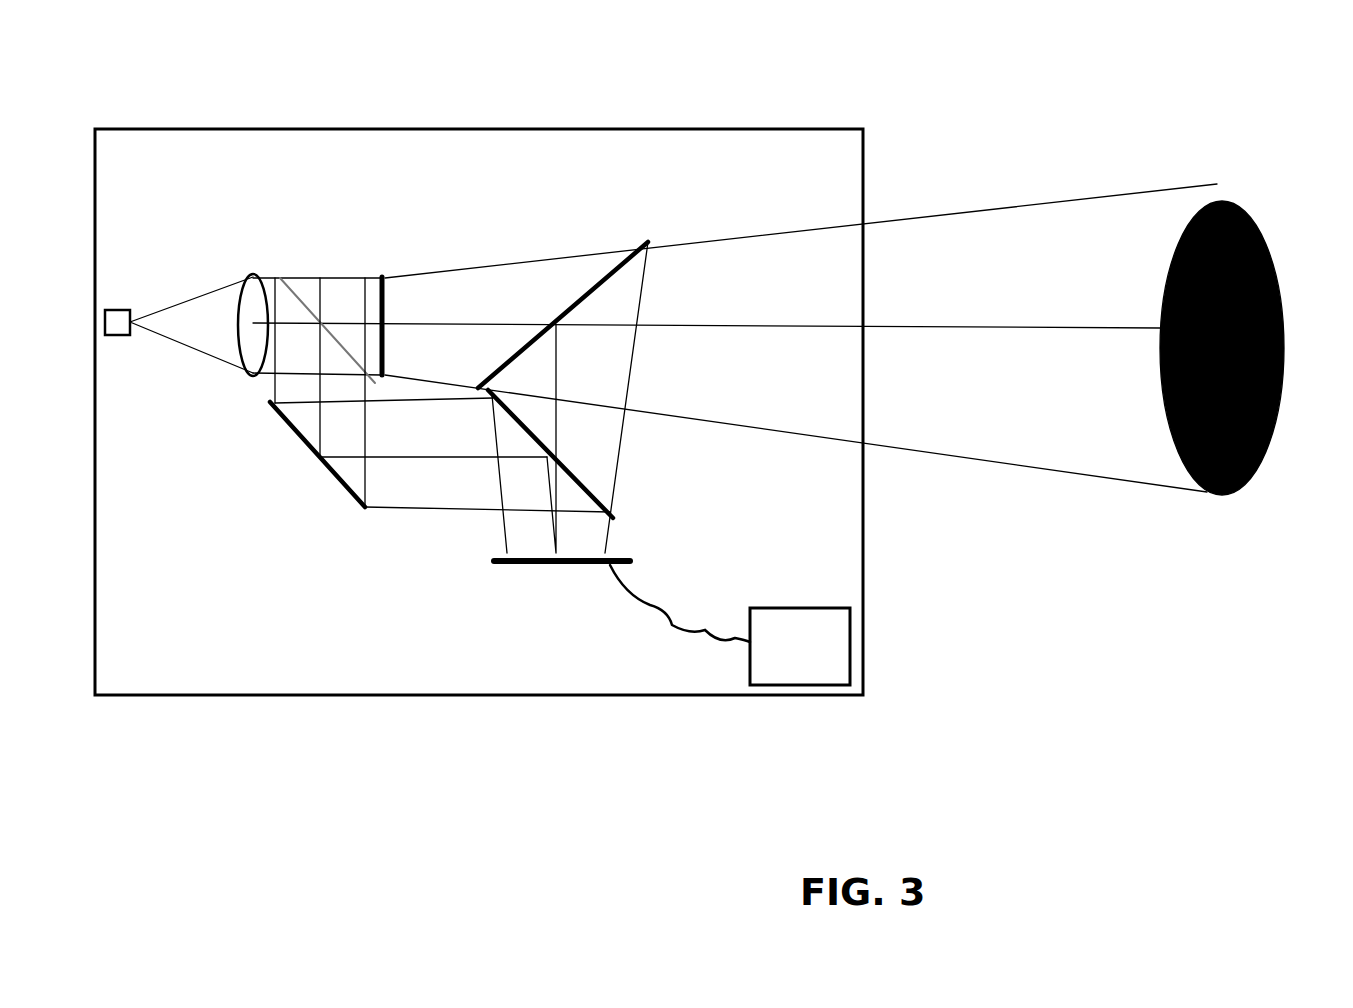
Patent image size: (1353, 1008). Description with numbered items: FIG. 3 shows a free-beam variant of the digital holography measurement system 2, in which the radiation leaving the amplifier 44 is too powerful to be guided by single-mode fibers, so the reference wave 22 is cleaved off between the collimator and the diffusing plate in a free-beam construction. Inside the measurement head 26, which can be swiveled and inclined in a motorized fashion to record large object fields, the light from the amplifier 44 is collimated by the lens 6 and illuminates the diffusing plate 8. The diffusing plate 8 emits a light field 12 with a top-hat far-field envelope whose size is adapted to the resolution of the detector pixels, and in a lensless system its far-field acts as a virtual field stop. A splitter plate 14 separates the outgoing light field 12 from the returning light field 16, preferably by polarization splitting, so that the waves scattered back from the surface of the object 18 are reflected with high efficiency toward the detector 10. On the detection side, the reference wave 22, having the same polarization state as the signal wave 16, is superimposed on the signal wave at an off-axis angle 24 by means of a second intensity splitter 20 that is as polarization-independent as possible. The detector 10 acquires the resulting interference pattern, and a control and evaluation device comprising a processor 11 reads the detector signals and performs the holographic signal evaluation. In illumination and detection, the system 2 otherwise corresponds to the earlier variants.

The system 2 is at (946, 116).
The lens 6 is at (253, 273).
The diffusing plate 8 is at (380, 280).
The detector 10 is at (582, 565).
The processor 11 is at (810, 673).
The light field 12 is at (443, 270).
The splitter plate 14 is at (607, 280).
The light field 16 is at (620, 460).
The object 18 is at (1267, 248).
The second intensity splitter 20 is at (570, 468).
The reference wave 22 is at (424, 512).
The angle 24 is at (605, 527).
The measurement head 26 is at (640, 128).
The amplifier 44 is at (112, 310).